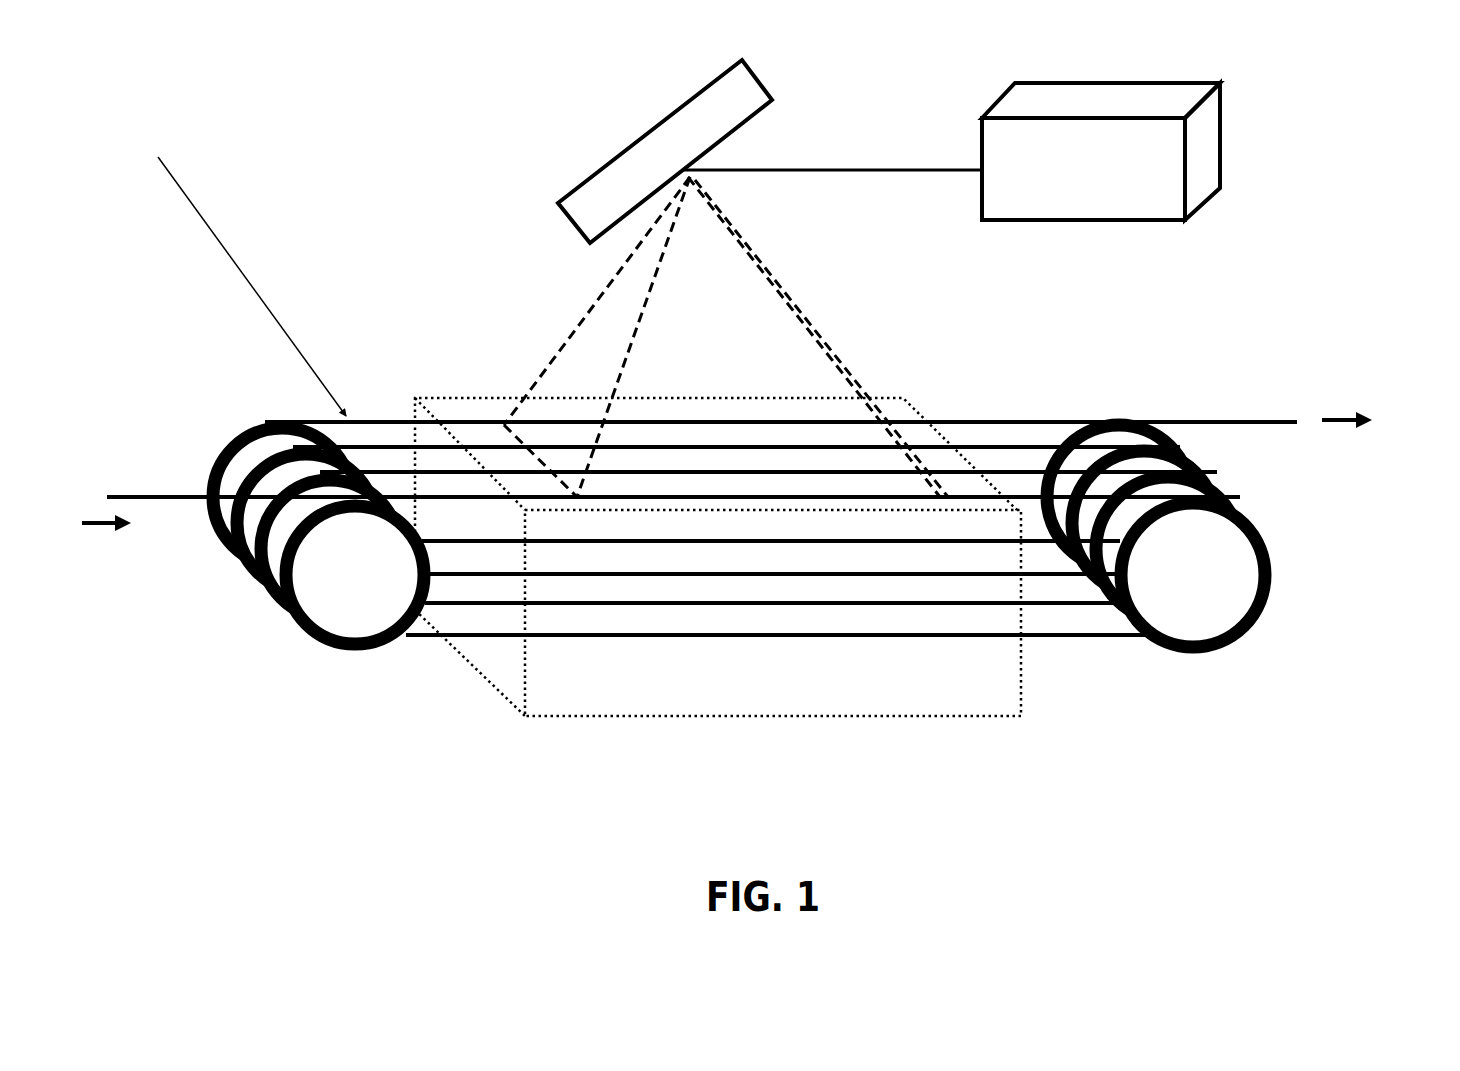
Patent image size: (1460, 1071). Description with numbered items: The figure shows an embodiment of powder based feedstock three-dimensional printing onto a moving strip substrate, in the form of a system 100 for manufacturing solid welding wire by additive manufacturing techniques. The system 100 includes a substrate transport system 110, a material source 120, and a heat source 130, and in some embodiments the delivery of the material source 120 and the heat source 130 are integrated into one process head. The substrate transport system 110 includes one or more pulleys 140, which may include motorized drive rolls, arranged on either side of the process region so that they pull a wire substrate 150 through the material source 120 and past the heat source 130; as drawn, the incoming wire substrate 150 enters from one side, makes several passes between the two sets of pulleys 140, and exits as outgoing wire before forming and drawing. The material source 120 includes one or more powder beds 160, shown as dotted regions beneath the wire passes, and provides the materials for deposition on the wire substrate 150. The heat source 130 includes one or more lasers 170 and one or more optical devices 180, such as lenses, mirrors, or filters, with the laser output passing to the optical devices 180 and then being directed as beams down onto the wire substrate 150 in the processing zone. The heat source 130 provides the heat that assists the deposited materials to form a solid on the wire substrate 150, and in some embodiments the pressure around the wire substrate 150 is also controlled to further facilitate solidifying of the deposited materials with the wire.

The system 100 is at (767, 459).
The substrate transport system 110 is at (245, 372).
The material source 120 is at (884, 760).
The heat source 130 is at (1110, 334).
The pulleys 140 is at (1160, 647).
The wire substrate 150 is at (382, 418).
The powder beds 160 is at (903, 398).
The lasers 170 is at (1095, 222).
The optical devices 180 is at (742, 62).